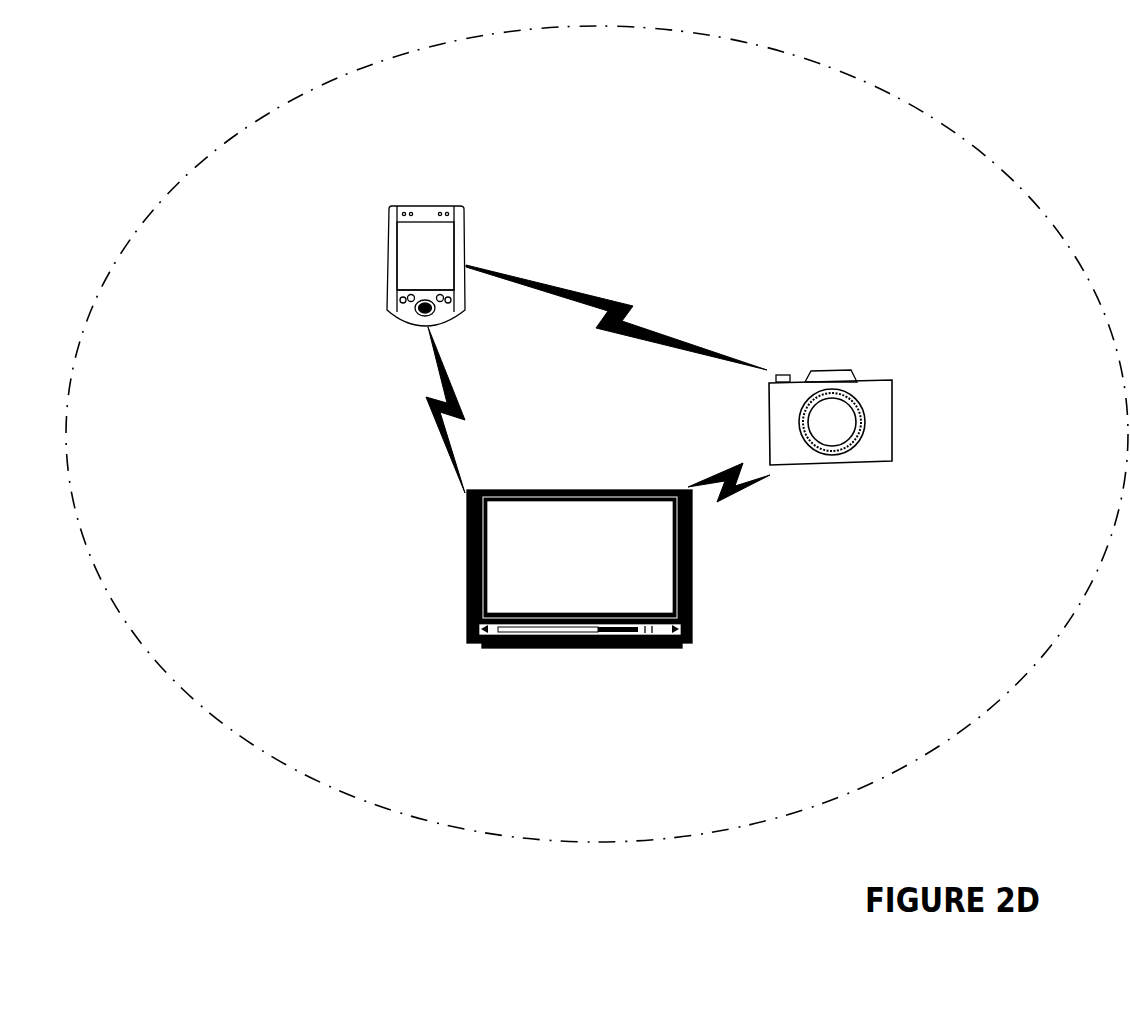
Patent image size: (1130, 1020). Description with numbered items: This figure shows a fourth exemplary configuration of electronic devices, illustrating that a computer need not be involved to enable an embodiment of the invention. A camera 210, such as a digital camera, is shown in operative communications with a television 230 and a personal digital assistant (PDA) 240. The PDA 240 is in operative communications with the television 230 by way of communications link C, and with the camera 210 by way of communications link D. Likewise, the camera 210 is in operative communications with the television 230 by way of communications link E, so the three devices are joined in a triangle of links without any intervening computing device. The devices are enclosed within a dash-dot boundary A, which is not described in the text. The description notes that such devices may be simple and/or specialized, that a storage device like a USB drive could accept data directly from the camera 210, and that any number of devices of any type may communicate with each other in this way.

The wireless network coverage area A is at (938, 118).
The personal digital assistant (PDA) 240 is at (423, 207).
The camera 210 is at (832, 368).
The television 230 is at (575, 490).
The communications link C is at (437, 415).
The communications link D is at (597, 297).
The communications link E is at (742, 490).